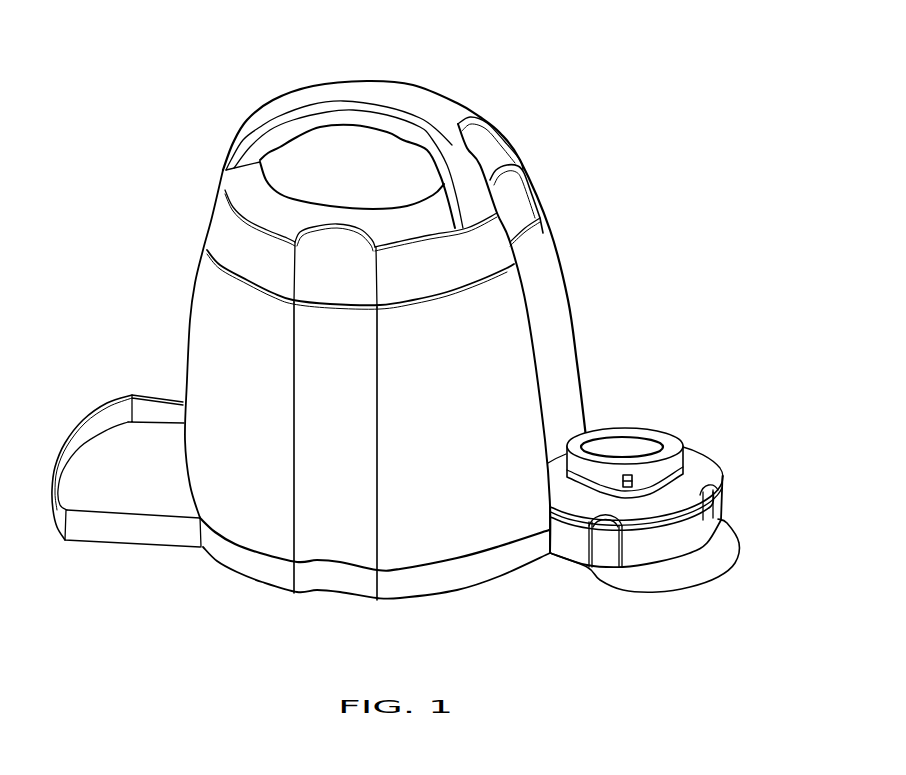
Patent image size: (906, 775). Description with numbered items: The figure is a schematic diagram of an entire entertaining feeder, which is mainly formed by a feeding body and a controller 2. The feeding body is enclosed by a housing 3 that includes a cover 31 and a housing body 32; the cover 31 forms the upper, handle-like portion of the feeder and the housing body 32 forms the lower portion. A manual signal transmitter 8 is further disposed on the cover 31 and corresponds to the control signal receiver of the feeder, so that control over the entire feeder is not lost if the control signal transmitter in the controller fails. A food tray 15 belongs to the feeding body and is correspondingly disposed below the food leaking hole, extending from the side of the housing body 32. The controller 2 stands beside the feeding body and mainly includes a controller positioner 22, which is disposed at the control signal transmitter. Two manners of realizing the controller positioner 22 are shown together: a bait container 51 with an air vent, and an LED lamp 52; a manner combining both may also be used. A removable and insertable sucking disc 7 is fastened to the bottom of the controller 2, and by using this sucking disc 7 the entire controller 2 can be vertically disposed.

The controller 2 is at (702, 470).
The housing 3 is at (464, 351).
The removable and insertable sucking disc 7 is at (728, 543).
The manual signal transmitter 8 is at (490, 150).
The food tray 15 is at (118, 438).
The controller positioner 22 is at (733, 357).
The cover 31 is at (238, 183).
The housing body 32 is at (214, 309).
The bait container 51 is at (631, 433).
The LED lamp 52 is at (639, 468).